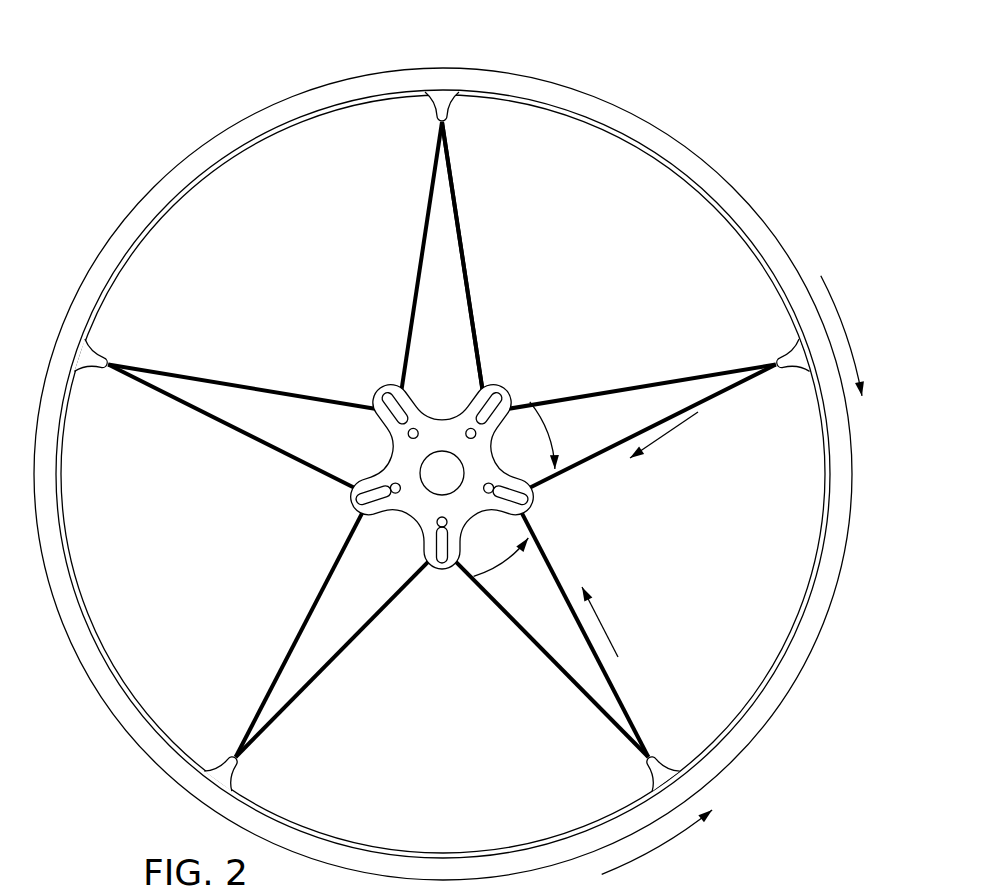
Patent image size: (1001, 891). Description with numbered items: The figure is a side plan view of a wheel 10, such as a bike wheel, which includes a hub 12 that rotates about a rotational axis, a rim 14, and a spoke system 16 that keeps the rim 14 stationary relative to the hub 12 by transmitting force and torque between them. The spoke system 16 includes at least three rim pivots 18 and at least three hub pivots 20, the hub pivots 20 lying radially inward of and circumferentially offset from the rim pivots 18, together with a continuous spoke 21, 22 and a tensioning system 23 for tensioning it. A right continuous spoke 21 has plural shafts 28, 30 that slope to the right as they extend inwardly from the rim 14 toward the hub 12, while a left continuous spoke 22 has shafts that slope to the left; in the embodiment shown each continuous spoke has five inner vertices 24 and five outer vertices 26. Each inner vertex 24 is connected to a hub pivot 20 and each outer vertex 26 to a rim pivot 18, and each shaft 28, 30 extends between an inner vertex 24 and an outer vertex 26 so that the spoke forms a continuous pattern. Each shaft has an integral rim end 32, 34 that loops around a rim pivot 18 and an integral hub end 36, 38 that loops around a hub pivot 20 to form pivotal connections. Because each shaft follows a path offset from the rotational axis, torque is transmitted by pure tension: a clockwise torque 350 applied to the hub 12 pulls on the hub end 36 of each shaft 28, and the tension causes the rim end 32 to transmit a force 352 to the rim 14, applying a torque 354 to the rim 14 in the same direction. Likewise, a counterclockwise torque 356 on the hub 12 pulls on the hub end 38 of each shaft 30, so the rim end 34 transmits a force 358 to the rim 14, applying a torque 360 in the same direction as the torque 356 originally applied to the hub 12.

The wheel 10 is at (722, 115).
The hub 12 is at (394, 454).
The rim 14 is at (642, 116).
The spoke system 16 is at (760, 203).
The rim pivot 18 is at (458, 123).
The hub pivot 20 is at (365, 517).
The right continuous spoke 21 is at (529, 258).
The left continuous spoke 22 is at (483, 350).
The tensioning system 23 is at (352, 325).
The inner vertex 24 is at (382, 388).
The outer vertex 26 is at (437, 121).
The shaft 28 is at (305, 613).
The shaft 30 is at (332, 667).
The rim end 32 is at (244, 749).
The rim end 34 is at (240, 758).
The hub end 36 is at (357, 512).
The hub end 38 is at (433, 583).
The clockwise torque 350 is at (561, 435).
The force 352 is at (665, 438).
The torque 354 is at (850, 336).
The counterclockwise torque 356 is at (503, 568).
The force 358 is at (615, 622).
The torque 360 is at (657, 847).